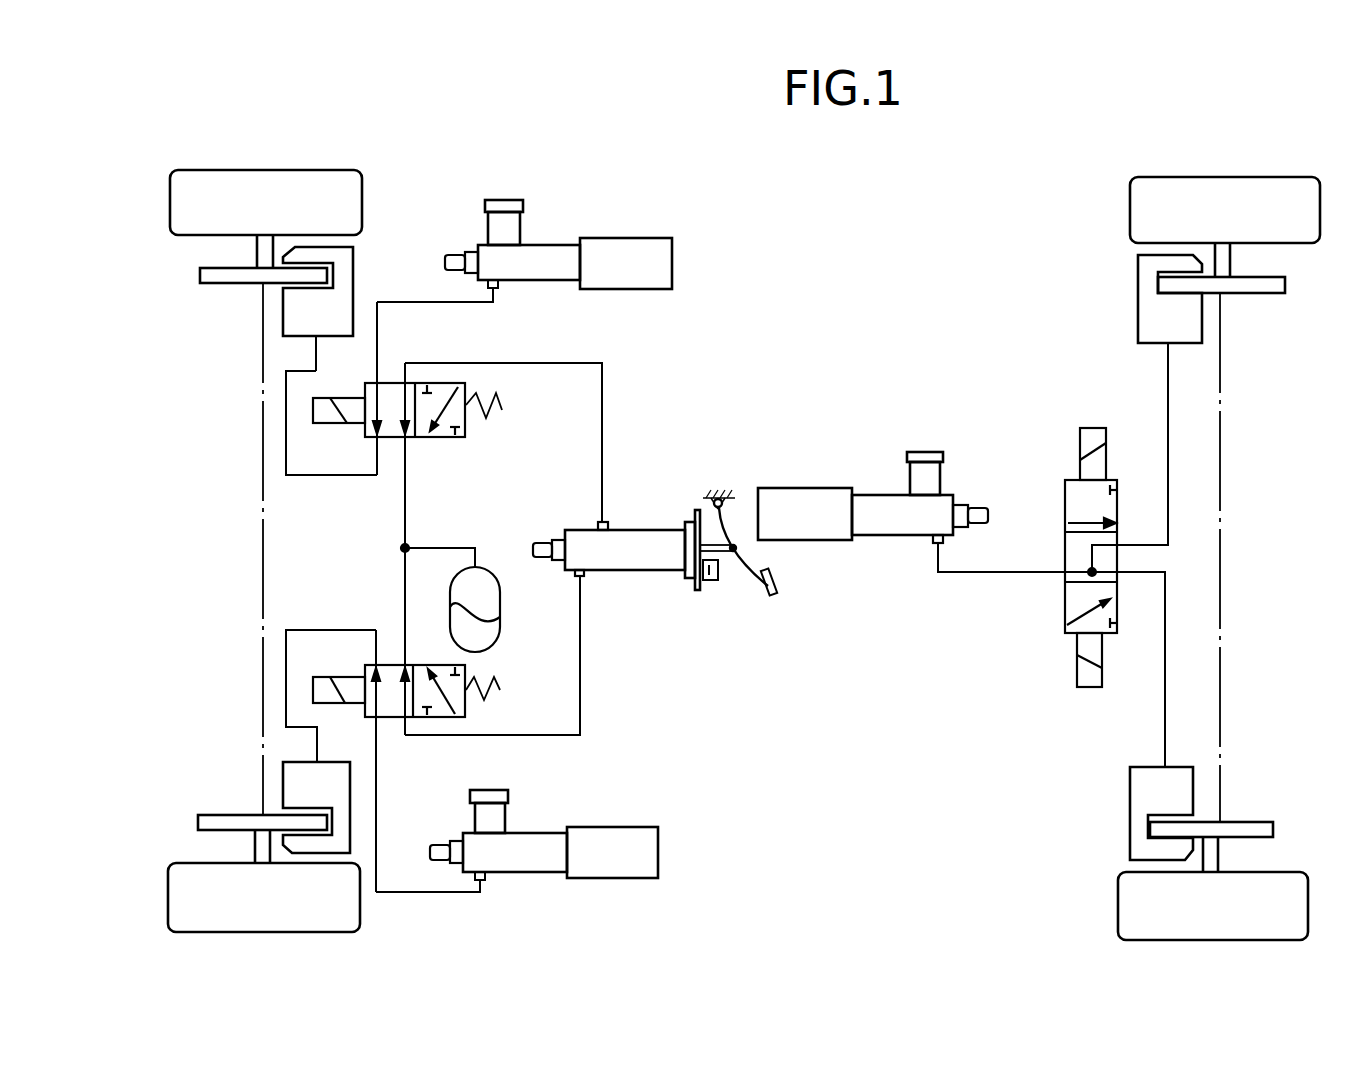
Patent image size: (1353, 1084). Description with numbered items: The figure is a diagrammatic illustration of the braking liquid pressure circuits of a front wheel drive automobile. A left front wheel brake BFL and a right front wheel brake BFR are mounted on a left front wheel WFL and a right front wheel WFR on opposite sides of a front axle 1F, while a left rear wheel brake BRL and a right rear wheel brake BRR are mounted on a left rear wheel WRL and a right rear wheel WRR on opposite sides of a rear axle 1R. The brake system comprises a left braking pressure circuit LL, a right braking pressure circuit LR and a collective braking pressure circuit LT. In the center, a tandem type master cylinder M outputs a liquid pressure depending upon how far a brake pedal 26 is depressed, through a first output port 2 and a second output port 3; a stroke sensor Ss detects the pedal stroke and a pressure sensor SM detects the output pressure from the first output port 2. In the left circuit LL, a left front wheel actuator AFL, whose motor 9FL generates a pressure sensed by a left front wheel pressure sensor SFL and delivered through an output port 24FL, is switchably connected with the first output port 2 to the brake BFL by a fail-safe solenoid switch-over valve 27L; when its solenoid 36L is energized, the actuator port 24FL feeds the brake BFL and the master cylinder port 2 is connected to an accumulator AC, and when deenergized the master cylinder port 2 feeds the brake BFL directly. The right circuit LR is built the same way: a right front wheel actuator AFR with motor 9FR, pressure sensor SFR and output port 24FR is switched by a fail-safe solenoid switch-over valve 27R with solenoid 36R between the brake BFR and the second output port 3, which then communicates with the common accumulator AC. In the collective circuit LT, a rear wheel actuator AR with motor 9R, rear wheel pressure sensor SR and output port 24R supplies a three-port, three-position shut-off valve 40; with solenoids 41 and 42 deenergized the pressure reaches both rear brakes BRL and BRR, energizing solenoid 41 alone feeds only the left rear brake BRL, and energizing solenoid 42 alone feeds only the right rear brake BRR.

The right front wheel WFR is at (358, 192).
The right front wheel brake BFR is at (356, 256).
The right front wheel pressure sensor SFR is at (445, 261).
The right front wheel actuator AFR is at (555, 245).
The motor 9FR is at (665, 258).
The output port 24FR is at (498, 288).
The solenoid 36R is at (325, 397).
The fail-safe solenoid switch-over valve 27R is at (465, 423).
The right braking pressure circuit LR is at (322, 475).
The second output port 3 is at (598, 522).
The tandem type master cylinder M is at (636, 537).
The pressure sensor SM is at (547, 538).
The first output port 2 is at (575, 575).
The accumulator AC is at (495, 595).
The stroke sensor Ss is at (714, 580).
The brake pedal 26 is at (775, 580).
The motor 9R is at (792, 495).
The rear wheel actuator AR is at (875, 495).
The rear wheel pressure sensor SR is at (978, 507).
The output port 24R is at (933, 541).
The shut-off valve 40 is at (1065, 533).
The solenoid 41 is at (1077, 672).
The solenoid 42 is at (1080, 445).
The collective braking pressure circuit LT is at (977, 572).
The rear axle 1R is at (1218, 602).
The right rear wheel WRR is at (1130, 197).
The right rear wheel brake BRR is at (1130, 281).
The left rear wheel brake BRL is at (1121, 788).
The left rear wheel WRL is at (1118, 888).
The front axle 1F is at (263, 610).
The left braking pressure circuit LL is at (313, 630).
The solenoid 36L is at (345, 677).
The fail-safe solenoid switch-over valve 27L is at (465, 708).
The left front wheel brake BFL is at (339, 754).
The left front wheel WFL is at (360, 920).
The left front wheel pressure sensor SFL is at (443, 845).
The left front wheel actuator AFL is at (540, 838).
The output port 24FL is at (486, 879).
The motor 9FL is at (625, 868).